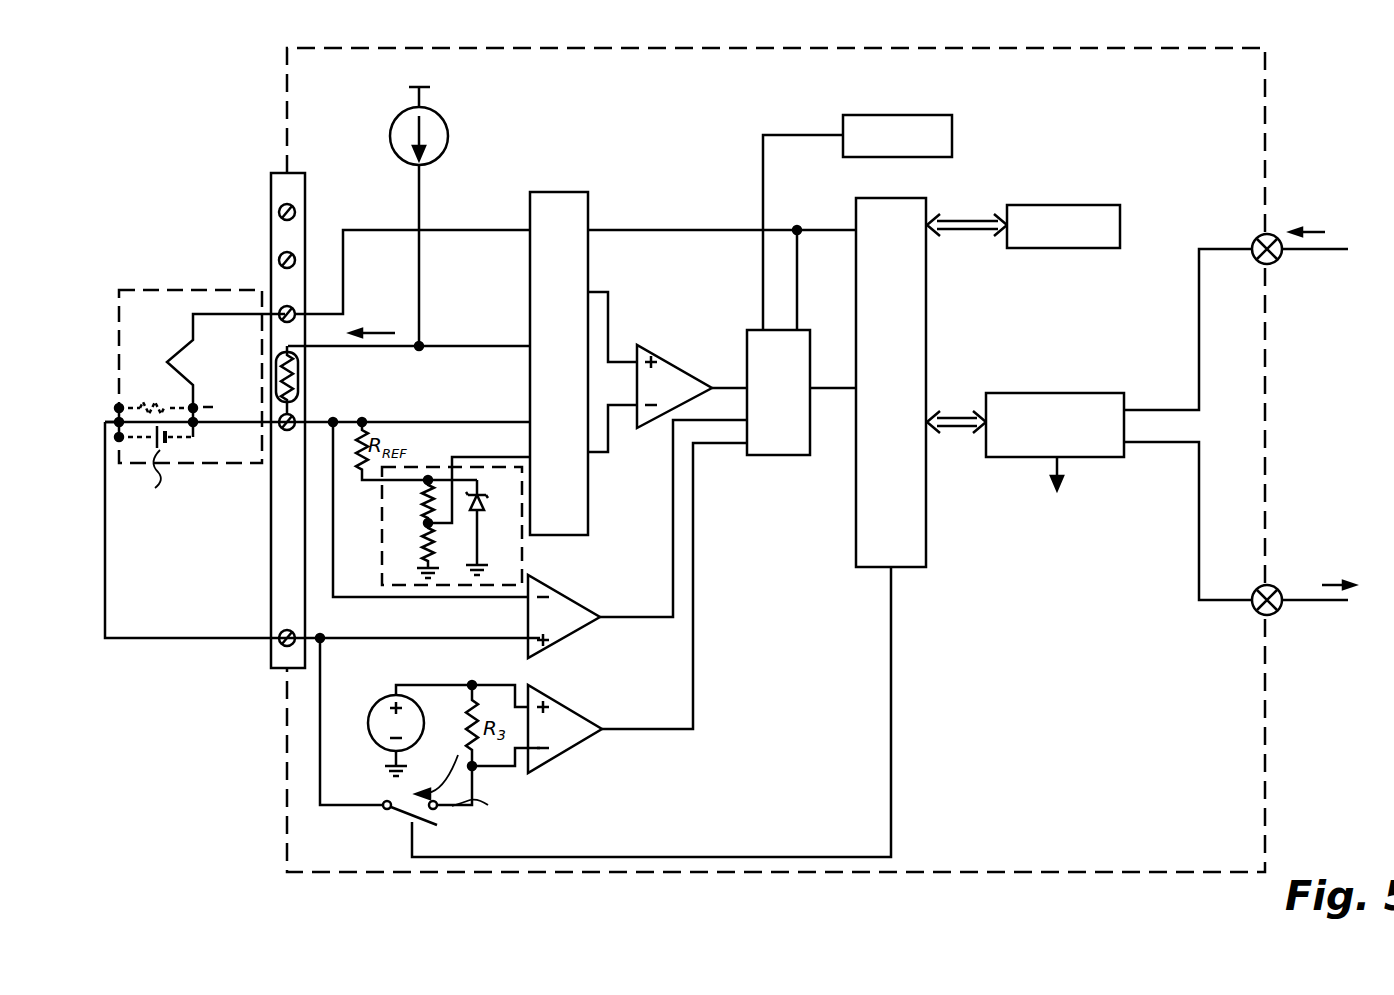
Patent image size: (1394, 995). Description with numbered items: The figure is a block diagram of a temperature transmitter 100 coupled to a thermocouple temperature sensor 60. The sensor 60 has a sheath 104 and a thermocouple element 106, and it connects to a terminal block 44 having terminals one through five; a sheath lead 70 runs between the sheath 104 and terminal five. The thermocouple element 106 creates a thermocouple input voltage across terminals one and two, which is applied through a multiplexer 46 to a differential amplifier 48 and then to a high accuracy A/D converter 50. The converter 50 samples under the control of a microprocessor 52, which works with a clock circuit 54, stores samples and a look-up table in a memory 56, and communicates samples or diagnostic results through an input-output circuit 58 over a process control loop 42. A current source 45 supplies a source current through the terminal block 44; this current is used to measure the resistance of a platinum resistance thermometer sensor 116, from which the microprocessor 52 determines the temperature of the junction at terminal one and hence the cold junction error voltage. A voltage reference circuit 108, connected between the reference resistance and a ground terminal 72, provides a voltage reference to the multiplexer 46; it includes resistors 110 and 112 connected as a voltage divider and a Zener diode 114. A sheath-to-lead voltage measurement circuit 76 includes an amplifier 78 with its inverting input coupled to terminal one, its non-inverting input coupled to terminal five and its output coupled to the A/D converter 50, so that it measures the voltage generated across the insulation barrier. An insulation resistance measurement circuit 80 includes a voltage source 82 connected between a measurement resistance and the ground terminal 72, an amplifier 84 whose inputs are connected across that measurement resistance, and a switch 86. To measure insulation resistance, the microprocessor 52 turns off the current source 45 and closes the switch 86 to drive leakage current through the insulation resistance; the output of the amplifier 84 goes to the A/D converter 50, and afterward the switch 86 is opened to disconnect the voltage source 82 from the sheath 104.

The temperature transmitter 100 is at (672, 48).
The process control loop 42 is at (1275, 262).
The terminal block 44 is at (293, 173).
The current source 45 is at (441, 117).
The multiplexer 46 is at (570, 192).
The differential amplifier 48 is at (660, 362).
The A/D converter 50 is at (760, 455).
The microprocessor 52 is at (895, 198).
The clock circuit 54 is at (898, 117).
The memory 56 is at (1040, 205).
The input-output circuit 58 is at (1010, 393).
The thermocouple temperature sensor 60 is at (215, 268).
The sheath 104 is at (155, 290).
The thermocouple element 106 is at (183, 332).
The platinum resistance thermometer sensor 116 is at (298, 378).
The sheath lead 70 is at (238, 634).
The voltage reference circuit 108 is at (466, 621).
The resistor 110 is at (412, 501).
The resistor 112 is at (414, 550).
The Zener diode 114 is at (480, 497).
The ground terminal 72 is at (480, 568).
The amplifier 78 is at (570, 601).
The sheath-to-lead voltage measurement circuit 76 is at (585, 645).
The voltage source 82 is at (375, 700).
The amplifier 84 is at (575, 709).
The insulation resistance measurement circuit 80 is at (571, 764).
The switch 86 is at (396, 812).